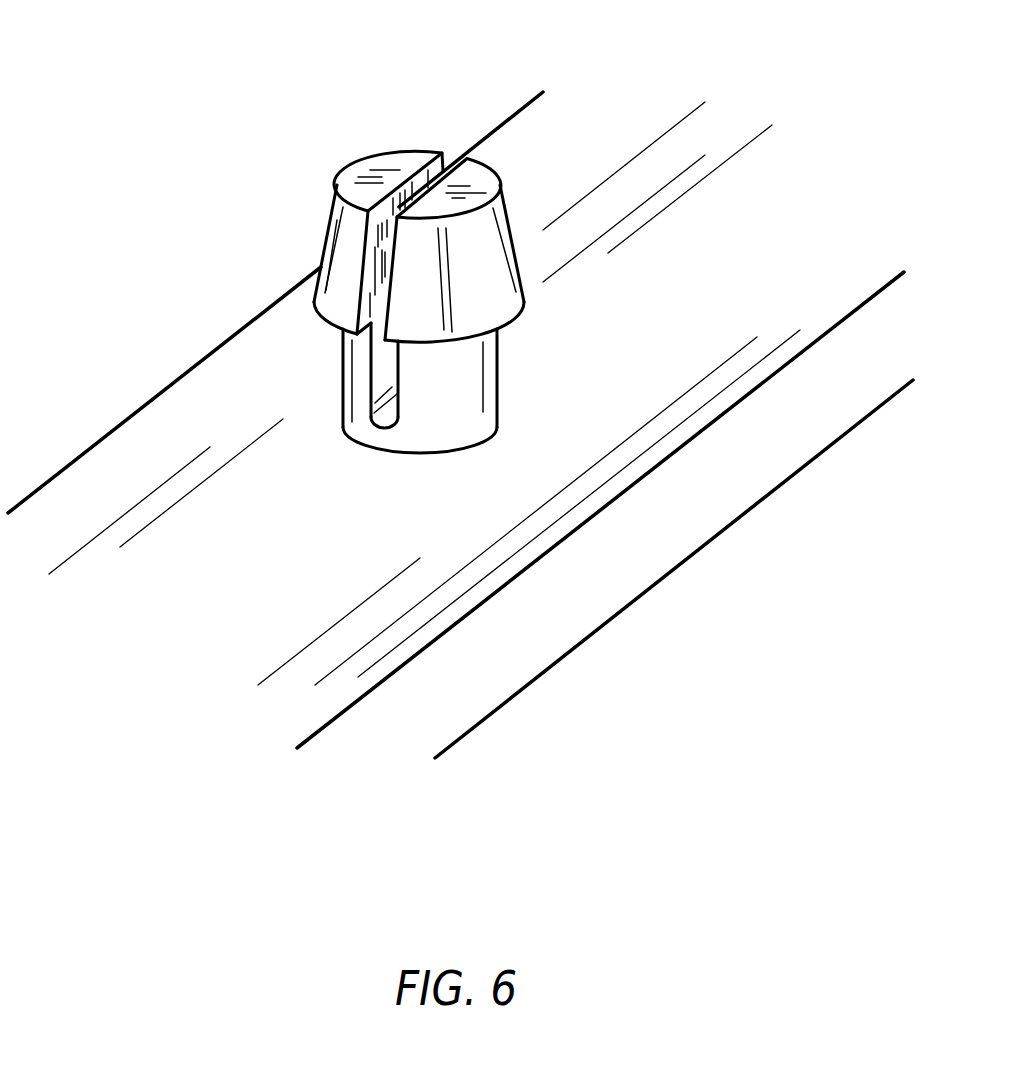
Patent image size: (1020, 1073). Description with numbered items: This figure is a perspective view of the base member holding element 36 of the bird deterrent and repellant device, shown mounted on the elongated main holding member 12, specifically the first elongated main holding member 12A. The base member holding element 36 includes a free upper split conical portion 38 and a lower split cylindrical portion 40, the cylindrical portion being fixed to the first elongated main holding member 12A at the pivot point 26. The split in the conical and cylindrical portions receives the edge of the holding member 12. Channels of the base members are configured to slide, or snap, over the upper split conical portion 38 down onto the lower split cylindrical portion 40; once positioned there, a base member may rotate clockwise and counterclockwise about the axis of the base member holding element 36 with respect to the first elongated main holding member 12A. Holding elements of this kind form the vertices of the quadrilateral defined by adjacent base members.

The elongated main holding member 12 is at (460, 425).
The first elongated main holding member 12A is at (623, 568).
The base member holding element 36 is at (387, 251).
The free upper split conical portion 38 is at (484, 243).
The lower split cylindrical portion 40 is at (467, 391).
The pivot point 26 is at (465, 448).